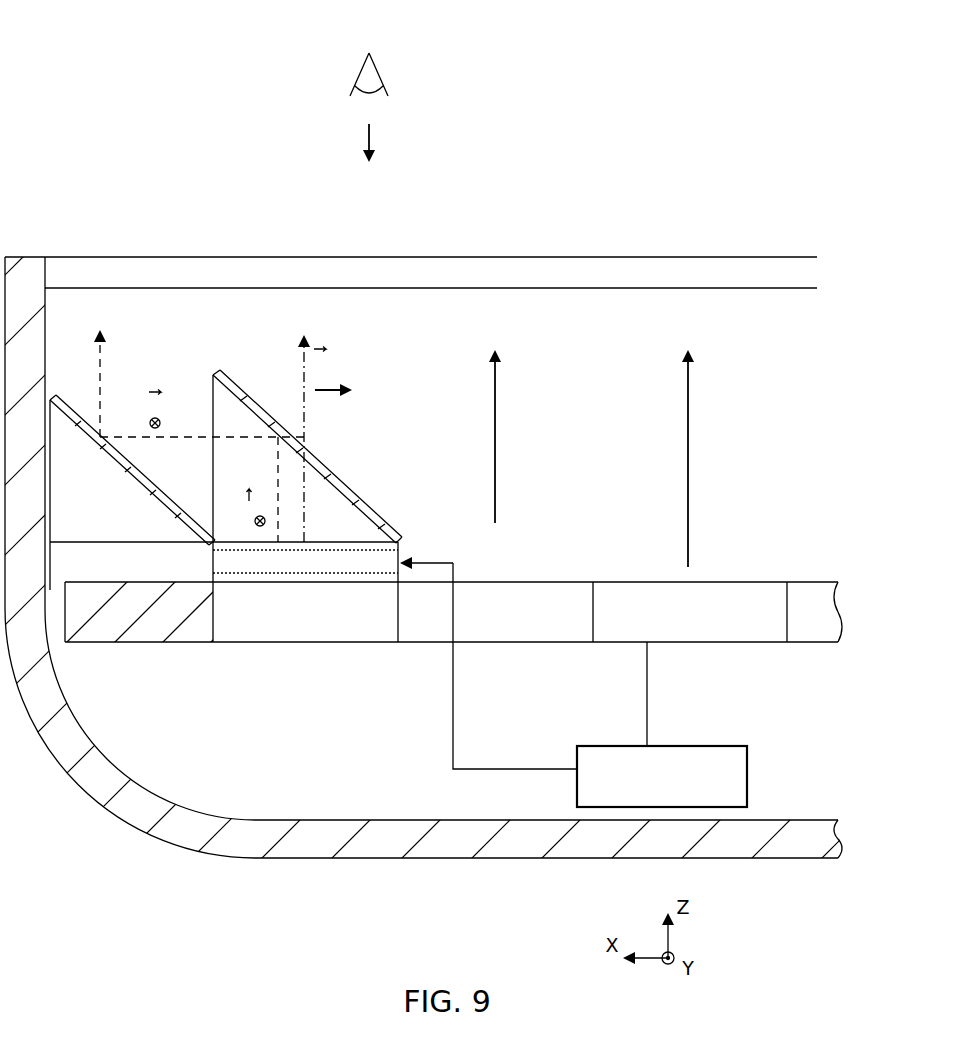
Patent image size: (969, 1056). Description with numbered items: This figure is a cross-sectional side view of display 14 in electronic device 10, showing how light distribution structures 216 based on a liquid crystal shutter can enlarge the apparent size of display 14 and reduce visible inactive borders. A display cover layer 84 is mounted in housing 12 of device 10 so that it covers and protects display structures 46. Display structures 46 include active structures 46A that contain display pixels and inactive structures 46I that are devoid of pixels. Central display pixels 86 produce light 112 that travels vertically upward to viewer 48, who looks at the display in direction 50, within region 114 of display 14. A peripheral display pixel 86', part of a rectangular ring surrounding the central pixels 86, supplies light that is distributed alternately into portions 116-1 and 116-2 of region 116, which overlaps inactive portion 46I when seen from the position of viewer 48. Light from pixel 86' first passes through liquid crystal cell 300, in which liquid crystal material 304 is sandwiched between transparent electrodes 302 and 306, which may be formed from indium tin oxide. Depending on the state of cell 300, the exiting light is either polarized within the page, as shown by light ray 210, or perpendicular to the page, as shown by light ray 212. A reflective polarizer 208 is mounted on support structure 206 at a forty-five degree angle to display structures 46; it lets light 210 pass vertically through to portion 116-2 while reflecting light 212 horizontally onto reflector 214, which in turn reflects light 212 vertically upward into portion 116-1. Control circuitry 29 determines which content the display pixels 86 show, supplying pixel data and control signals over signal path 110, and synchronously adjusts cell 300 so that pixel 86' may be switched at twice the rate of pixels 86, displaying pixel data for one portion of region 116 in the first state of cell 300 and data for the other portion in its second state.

The electronic device 10 is at (54, 150).
The housing 12 is at (182, 833).
The display 14 is at (729, 183).
The control circuitry 29 is at (748, 770).
The display structures 46 is at (748, 560).
The inactive structures 46I is at (107, 632).
The active structures 46A is at (828, 675).
The viewer 48 is at (377, 70).
The direction 50 is at (372, 135).
The display cover layer 84 is at (348, 275).
The display pixels 86 is at (595, 569).
The peripheral display pixel 86' is at (350, 652).
The signal path 110 is at (648, 705).
The light 112 is at (495, 423).
The region 114 is at (817, 243).
The region 116 is at (380, 218).
The portion 116-1 is at (47, 248).
The portion 116-2 is at (200, 248).
The support structure 206 is at (358, 522).
The reflective polarizer 208 is at (348, 485).
The light ray 210 is at (305, 412).
The light ray 212 is at (100, 352).
The reflector 214 is at (150, 470).
The light distribution structures 216 is at (365, 358).
The liquid crystal cell 300 is at (426, 541).
The electrode 302 is at (212, 583).
The liquid crystal material 304 is at (222, 562).
The electrode 306 is at (213, 548).